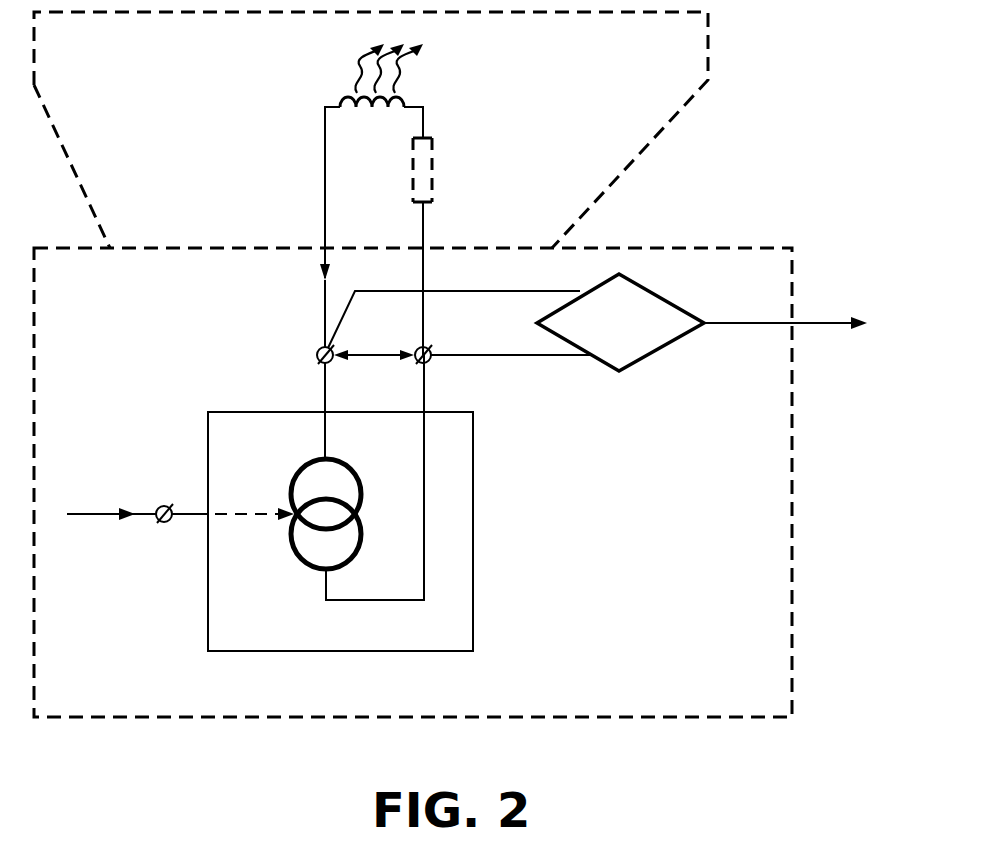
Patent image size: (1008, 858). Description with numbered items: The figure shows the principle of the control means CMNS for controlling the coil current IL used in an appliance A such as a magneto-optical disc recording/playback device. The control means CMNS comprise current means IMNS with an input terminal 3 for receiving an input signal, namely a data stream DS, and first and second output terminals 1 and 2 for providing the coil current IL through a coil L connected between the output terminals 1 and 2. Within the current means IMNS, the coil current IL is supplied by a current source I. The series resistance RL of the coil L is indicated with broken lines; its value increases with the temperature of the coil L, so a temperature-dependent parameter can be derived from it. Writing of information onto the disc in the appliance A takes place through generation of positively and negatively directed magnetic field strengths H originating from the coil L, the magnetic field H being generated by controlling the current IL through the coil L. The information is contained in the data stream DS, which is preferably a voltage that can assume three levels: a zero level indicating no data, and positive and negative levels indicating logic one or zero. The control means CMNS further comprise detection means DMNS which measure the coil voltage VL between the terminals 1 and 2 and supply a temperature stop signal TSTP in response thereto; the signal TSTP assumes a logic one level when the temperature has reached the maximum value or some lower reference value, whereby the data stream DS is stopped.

The appliance A is at (710, 42).
The control means CMNS is at (792, 486).
The coil L is at (338, 97).
The magnetic field strength H is at (410, 70).
The series resistance RL is at (434, 172).
The coil current IL is at (318, 277).
The first output terminal 1 is at (317, 352).
The second output terminal 2 is at (431, 361).
The coil voltage VL is at (374, 334).
The detection means DMNS is at (652, 338).
The temperature stop signal TSTP is at (822, 327).
The current means IMNS is at (259, 652).
The current source I is at (330, 458).
The data stream DS is at (92, 517).
The input terminal 3 is at (167, 522).